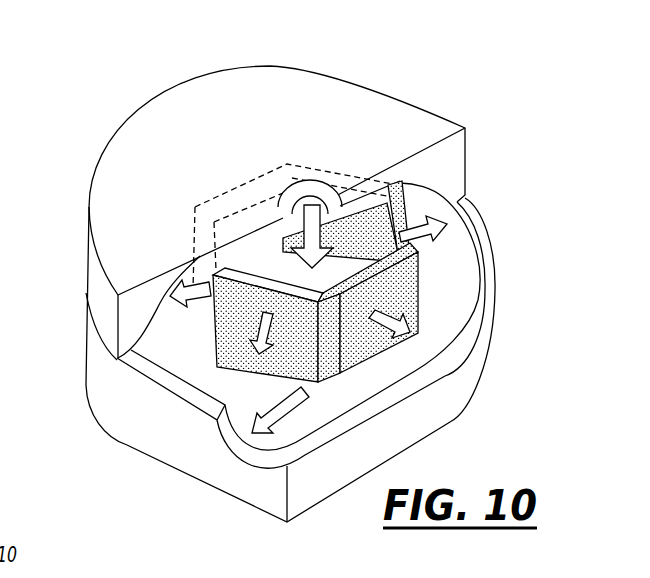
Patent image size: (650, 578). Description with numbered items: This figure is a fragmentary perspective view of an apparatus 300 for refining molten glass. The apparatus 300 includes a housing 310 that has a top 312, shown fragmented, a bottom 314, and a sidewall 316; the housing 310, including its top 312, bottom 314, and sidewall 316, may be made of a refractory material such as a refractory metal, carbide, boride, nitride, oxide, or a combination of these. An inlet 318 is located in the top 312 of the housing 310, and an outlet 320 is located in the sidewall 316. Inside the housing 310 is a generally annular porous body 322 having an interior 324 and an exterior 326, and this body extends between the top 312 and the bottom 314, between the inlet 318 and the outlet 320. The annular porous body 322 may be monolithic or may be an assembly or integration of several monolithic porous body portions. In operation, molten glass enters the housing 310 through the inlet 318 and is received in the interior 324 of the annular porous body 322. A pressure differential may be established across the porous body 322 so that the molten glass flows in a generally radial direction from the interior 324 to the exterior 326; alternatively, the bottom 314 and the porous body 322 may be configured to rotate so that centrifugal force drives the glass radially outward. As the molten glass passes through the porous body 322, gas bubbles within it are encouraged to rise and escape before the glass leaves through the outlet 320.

The apparatus 300 is at (291, 266).
The housing 310 is at (492, 317).
The top 312 is at (220, 90).
The bottom 314 is at (413, 443).
The sidewall 316 is at (86, 294).
The inlet 318 is at (315, 187).
The outlet 320 is at (231, 426).
The annular porous body 322 is at (420, 278).
The interior 324 is at (254, 201).
The exterior 326 is at (212, 342).